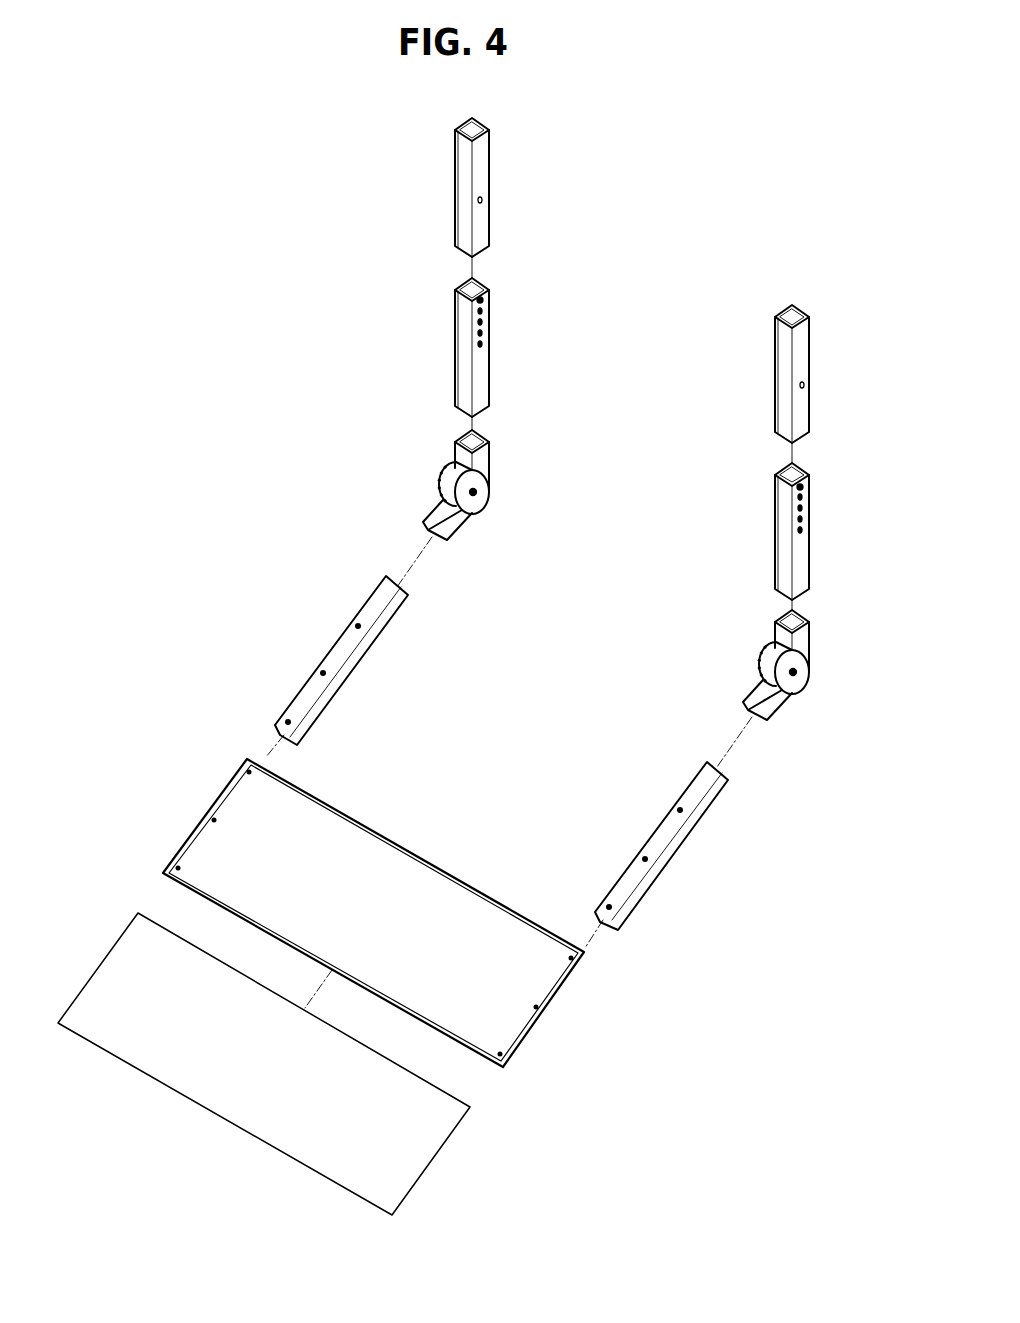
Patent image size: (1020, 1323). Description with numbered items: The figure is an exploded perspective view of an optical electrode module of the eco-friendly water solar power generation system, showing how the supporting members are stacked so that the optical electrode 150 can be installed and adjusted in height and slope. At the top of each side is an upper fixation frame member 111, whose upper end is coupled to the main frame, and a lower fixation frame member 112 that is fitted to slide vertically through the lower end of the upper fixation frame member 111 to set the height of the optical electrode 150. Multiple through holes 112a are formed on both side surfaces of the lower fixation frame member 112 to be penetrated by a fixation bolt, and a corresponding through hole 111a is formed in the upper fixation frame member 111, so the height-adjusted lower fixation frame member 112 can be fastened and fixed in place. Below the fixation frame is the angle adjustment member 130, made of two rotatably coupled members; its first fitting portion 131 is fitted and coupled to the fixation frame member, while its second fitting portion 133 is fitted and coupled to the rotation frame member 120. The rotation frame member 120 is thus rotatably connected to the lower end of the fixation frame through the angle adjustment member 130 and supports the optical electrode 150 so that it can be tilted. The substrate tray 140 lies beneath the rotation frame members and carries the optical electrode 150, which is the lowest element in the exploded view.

The upper fixation frame member 111 is at (806, 346).
The through hole 111a is at (804, 385).
The lower fixation frame member 112 is at (804, 572).
The through holes 112a is at (805, 529).
The rotation frame member 120 is at (332, 655).
The angle adjustment member 130 is at (841, 693).
The first fitting portion 131 is at (808, 634).
The second fitting portion 133 is at (815, 682).
The substrate tray 140 is at (548, 985).
The optical electrode 150 is at (435, 1138).